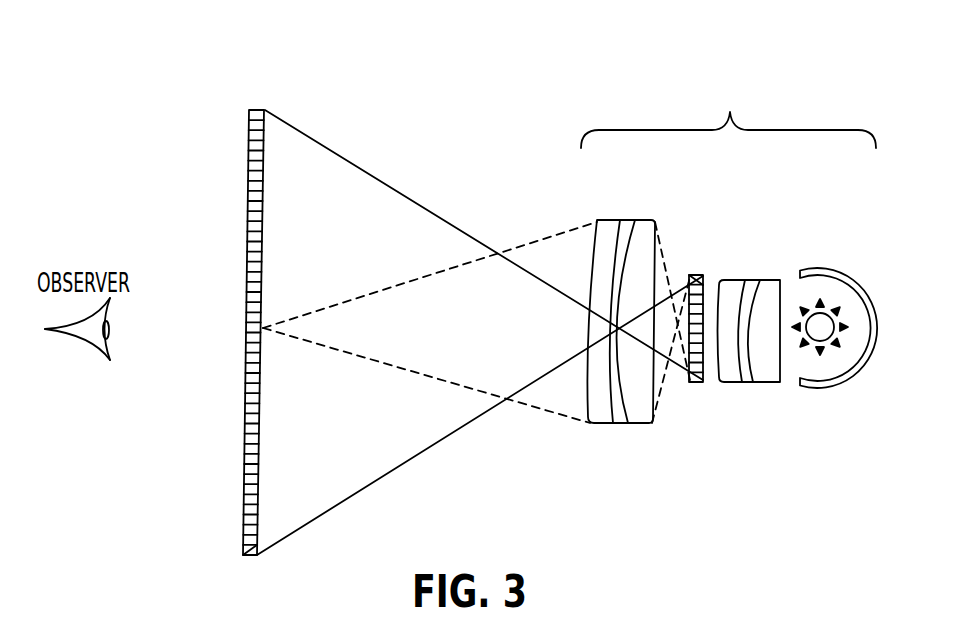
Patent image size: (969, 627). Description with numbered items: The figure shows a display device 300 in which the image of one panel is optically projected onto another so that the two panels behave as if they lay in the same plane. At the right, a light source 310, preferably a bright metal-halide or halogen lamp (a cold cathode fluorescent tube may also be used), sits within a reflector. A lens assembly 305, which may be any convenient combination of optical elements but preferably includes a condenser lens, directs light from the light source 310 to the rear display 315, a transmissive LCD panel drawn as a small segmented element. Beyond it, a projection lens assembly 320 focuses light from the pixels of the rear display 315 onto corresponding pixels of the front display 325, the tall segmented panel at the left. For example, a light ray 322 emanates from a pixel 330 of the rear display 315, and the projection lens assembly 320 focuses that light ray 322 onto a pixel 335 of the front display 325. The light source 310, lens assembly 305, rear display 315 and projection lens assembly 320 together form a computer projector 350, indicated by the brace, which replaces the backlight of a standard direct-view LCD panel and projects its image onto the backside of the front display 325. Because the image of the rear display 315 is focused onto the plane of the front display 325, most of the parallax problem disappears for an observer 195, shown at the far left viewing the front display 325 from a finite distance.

The display device 300 is at (472, 95).
The front display 325 is at (236, 141).
The pixel 335 is at (243, 550).
The light ray 322 is at (430, 448).
The projection lens assembly 320 is at (638, 442).
The pixel 330 is at (700, 275).
The rear display 315 is at (688, 259).
The lens assembly 305 is at (783, 390).
The light source 310 is at (795, 279).
The computer projector 350 is at (728, 115).
The observer 195 is at (113, 330).